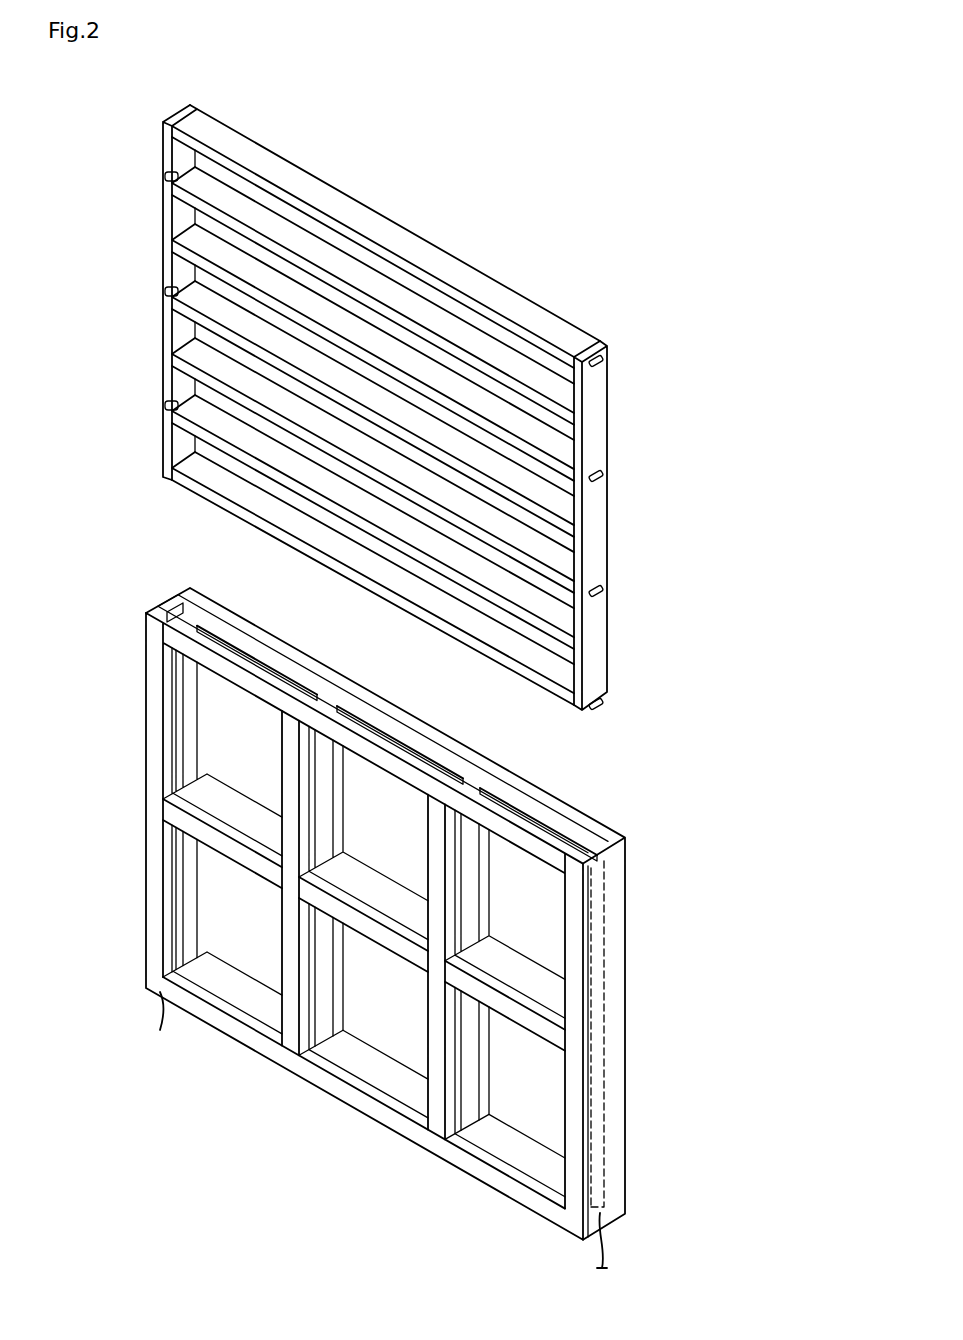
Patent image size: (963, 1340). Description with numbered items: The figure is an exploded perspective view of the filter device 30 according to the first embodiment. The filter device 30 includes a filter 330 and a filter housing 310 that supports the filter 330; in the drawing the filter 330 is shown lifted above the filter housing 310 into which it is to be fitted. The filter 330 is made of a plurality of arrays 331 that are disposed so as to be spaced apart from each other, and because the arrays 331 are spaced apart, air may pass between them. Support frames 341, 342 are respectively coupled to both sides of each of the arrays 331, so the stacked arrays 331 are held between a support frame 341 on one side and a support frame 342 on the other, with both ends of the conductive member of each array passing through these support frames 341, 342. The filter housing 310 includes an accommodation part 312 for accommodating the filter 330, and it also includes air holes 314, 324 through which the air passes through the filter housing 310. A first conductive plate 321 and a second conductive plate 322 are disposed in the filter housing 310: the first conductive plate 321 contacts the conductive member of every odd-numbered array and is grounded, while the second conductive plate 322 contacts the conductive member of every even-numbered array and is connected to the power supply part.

The filter device 30 is at (108, 592).
The filter housing 310 is at (623, 937).
The accommodation part 312 is at (232, 608).
The air hole 314 is at (345, 1082).
The first conductive plate 321 is at (603, 843).
The second conductive plate 322 is at (172, 600).
The air hole 324 is at (553, 828).
The filter 330 is at (446, 157).
The array 331 is at (553, 303).
The support frame 341 is at (163, 218).
The support frame 342 is at (601, 425).